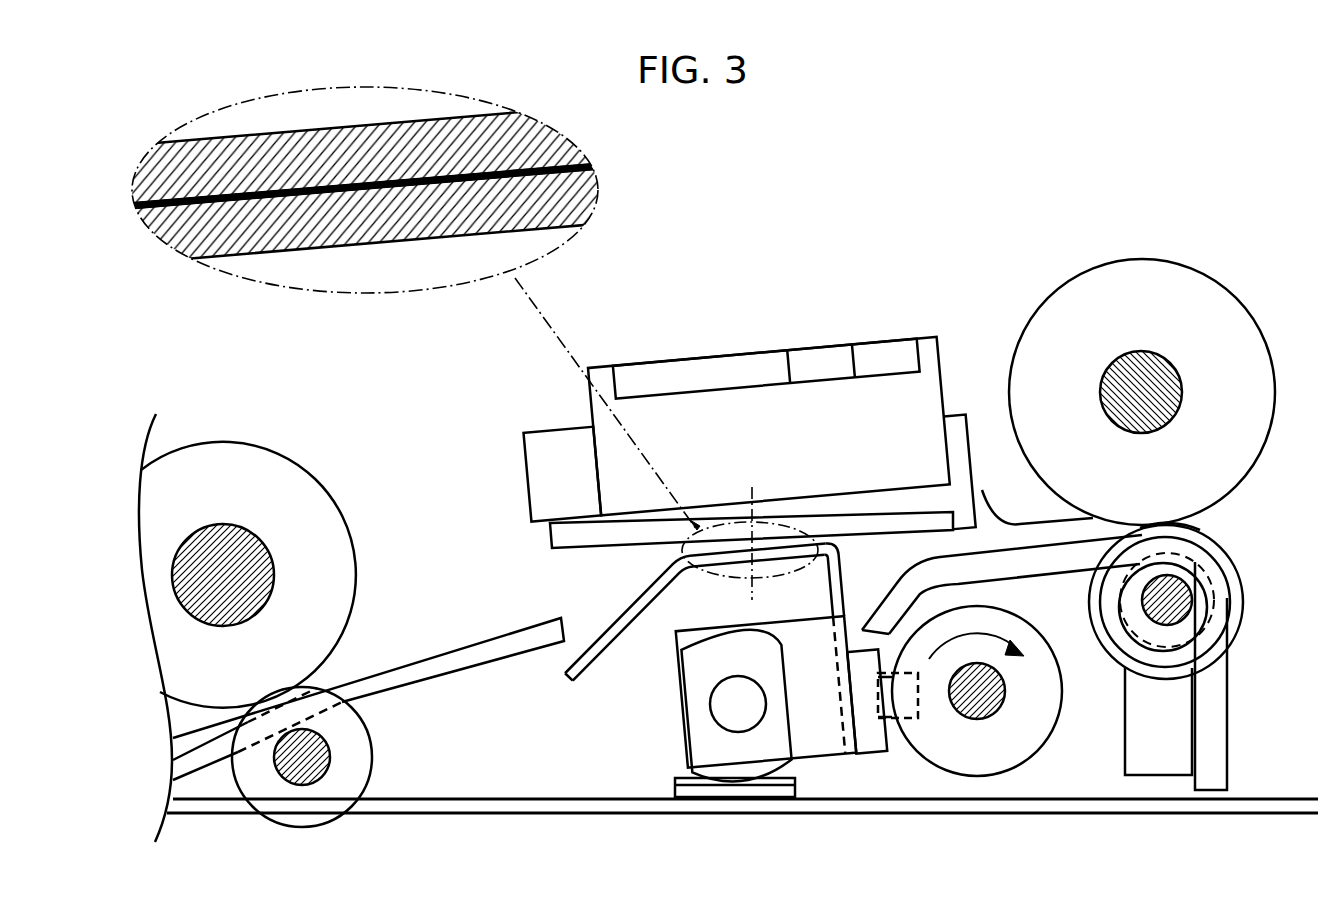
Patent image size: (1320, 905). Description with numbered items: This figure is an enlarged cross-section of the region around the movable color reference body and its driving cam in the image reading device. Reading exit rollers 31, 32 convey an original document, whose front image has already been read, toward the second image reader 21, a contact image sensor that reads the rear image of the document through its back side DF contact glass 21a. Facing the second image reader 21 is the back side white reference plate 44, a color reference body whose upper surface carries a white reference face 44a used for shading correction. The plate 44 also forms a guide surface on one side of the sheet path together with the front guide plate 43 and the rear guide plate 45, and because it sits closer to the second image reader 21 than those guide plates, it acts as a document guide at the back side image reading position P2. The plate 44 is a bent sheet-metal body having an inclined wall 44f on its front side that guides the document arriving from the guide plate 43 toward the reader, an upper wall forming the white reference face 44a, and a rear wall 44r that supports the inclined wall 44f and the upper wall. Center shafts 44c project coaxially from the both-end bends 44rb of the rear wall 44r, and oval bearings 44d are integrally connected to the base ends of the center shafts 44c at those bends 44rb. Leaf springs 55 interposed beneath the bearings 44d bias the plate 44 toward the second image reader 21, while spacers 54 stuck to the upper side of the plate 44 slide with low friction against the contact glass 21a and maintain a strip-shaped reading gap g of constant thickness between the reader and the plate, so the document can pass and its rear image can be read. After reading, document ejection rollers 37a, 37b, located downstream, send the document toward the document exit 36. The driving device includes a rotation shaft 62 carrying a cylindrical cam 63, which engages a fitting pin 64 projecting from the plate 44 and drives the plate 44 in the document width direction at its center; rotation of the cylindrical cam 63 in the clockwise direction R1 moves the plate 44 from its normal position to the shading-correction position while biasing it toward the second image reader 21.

The second image reader 21 is at (703, 400).
The back side DF contact glass 21a is at (528, 128).
The reading exit roller 31 is at (366, 763).
The reading exit roller 32 is at (296, 488).
The document exit 36 is at (1198, 518).
The document ejection roller 37a is at (1240, 604).
The document ejection roller 37b is at (1218, 302).
The front guide plate 43 is at (450, 655).
The back side white reference plate 44 is at (318, 242).
The white reference face 44a is at (577, 169).
The center shaft 44c is at (716, 707).
The bearing 44d is at (708, 768).
The inclined wall 44f is at (622, 617).
The rear wall 44r is at (842, 588).
The both-end bend 44rb is at (820, 752).
The rear guide plate 45 is at (1072, 570).
The spacer 54 is at (365, 182).
The leaf spring 55 is at (763, 792).
The rotation shaft 62 is at (1000, 702).
The cylindrical cam 63 is at (1028, 760).
The fitting pin 64 is at (893, 722).
The reading gap g is at (150, 203).
The back side image reading position P2 is at (750, 530).
The clockwise direction R1 is at (1017, 630).